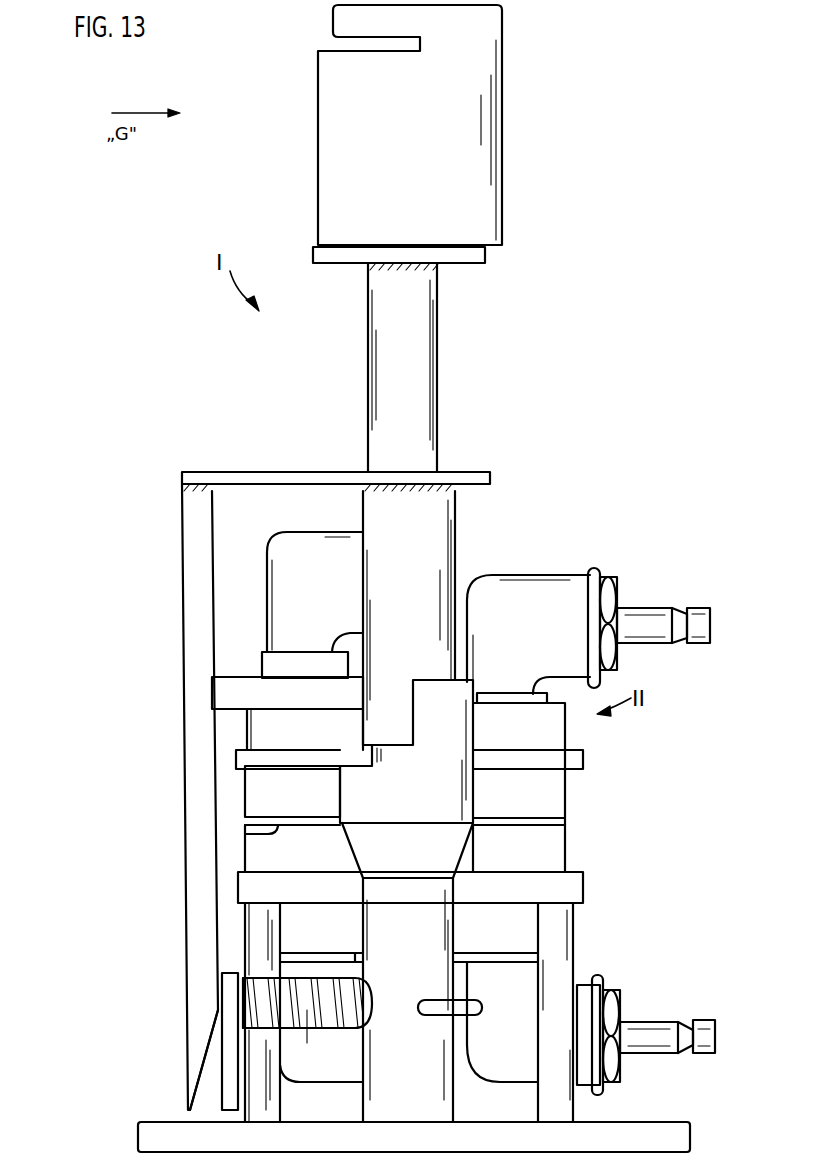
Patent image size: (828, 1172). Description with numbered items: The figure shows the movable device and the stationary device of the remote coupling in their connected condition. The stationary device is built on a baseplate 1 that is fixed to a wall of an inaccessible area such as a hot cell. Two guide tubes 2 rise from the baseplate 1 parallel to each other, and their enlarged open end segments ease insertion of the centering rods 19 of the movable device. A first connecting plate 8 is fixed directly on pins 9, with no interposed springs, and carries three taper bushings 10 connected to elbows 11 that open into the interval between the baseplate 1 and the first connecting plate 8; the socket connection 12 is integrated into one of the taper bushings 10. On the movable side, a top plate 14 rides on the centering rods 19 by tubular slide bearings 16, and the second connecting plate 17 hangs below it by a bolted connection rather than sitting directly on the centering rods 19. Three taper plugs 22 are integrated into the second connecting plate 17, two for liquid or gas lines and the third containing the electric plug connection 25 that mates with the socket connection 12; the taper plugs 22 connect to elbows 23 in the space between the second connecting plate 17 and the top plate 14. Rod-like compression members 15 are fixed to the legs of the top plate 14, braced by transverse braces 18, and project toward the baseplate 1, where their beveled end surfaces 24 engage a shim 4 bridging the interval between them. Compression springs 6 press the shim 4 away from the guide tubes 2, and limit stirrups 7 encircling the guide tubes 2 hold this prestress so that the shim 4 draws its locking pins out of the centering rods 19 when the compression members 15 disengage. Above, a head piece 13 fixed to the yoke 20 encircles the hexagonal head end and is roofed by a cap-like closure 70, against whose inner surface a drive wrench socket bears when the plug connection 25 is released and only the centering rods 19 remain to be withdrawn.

The baseplate 1 is at (150, 1128).
The guide tube 2 is at (366, 797).
The shim 4 is at (228, 1048).
The compression spring 6 is at (247, 1000).
The limit stirrup 7 is at (480, 1005).
The first connecting plate 8 is at (583, 886).
The pin 9 is at (255, 937).
The taper bushing 10 is at (243, 843).
The elbow 11 is at (597, 1017).
The socket connection 12 is at (243, 830).
The head piece 13 is at (481, 95).
The top plate 14 is at (188, 473).
The compression member 15 is at (192, 583).
The slide bearing 16 is at (444, 520).
The second connecting plate 17 is at (583, 766).
The transverse brace 18 is at (228, 695).
The centering rod 19 is at (420, 390).
The yoke 20 is at (482, 257).
The taper plug 22 is at (243, 796).
The elbow 23 is at (562, 583).
The beveled end surface 24 is at (207, 1052).
The electric plug connection 25 is at (243, 788).
The cap-like closure 70 is at (345, 22).